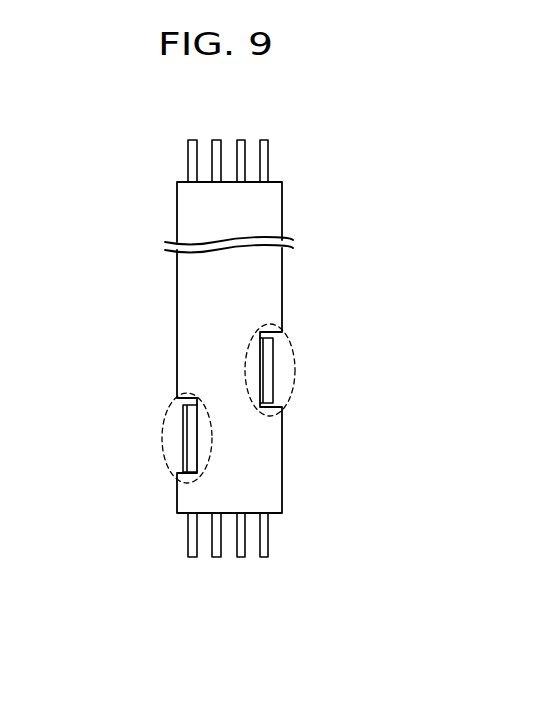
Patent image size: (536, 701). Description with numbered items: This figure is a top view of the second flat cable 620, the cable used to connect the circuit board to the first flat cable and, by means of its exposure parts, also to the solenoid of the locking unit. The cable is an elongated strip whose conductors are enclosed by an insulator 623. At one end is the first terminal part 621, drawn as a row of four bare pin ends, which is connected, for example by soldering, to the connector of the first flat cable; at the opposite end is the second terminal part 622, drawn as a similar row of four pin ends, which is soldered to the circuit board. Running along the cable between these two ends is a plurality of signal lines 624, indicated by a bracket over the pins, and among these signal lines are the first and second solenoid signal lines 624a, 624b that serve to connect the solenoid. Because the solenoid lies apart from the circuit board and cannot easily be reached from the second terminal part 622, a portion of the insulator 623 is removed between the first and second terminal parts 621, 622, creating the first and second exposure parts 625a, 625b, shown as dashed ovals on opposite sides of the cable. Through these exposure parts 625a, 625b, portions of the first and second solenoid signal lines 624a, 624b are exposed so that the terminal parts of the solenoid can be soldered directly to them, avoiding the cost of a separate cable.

The second flat cable 620 is at (112, 191).
The first terminal part 621 is at (295, 140).
The second terminal part 622 is at (294, 513).
The insulator 623 is at (177, 345).
The signal lines 624 is at (268, 132).
The first solenoid signal line 624a is at (188, 447).
The second solenoid signal line 624b is at (272, 353).
The first exposure part 625a is at (172, 407).
The second exposure part 625b is at (293, 387).